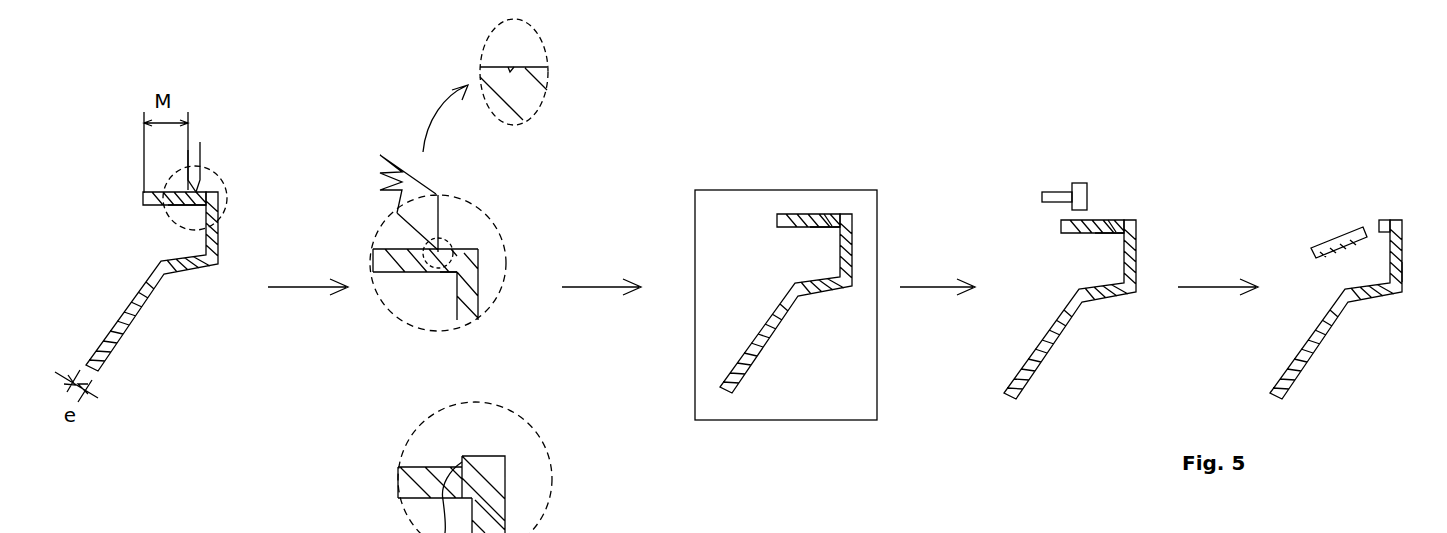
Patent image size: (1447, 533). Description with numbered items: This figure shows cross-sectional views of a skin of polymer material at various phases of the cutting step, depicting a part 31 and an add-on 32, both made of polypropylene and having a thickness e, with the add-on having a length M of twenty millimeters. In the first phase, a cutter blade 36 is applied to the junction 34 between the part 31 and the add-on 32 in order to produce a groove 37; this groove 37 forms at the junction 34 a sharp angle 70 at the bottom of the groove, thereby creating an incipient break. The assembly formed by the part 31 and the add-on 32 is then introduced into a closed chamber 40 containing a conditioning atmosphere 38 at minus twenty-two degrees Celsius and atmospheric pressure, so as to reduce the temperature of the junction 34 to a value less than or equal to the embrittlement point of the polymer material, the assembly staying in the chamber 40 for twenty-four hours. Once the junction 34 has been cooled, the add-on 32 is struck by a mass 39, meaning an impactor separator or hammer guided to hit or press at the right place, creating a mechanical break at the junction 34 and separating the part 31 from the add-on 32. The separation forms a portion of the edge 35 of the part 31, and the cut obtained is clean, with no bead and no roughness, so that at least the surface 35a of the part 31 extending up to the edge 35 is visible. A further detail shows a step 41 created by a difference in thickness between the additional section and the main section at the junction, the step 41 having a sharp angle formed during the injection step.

The part 31 is at (220, 240).
The add-on 32 is at (157, 191).
The junction 34 is at (190, 206).
The edge 35 is at (1381, 226).
The surface 35a is at (1414, 274).
The cutter blade 36 is at (197, 157).
The groove 37 is at (440, 250).
The conditioning atmosphere 38 is at (837, 372).
The mass 39 is at (1053, 197).
The closed chamber 40 is at (727, 188).
The step 41 is at (462, 462).
The sharp angle 70 is at (510, 72).